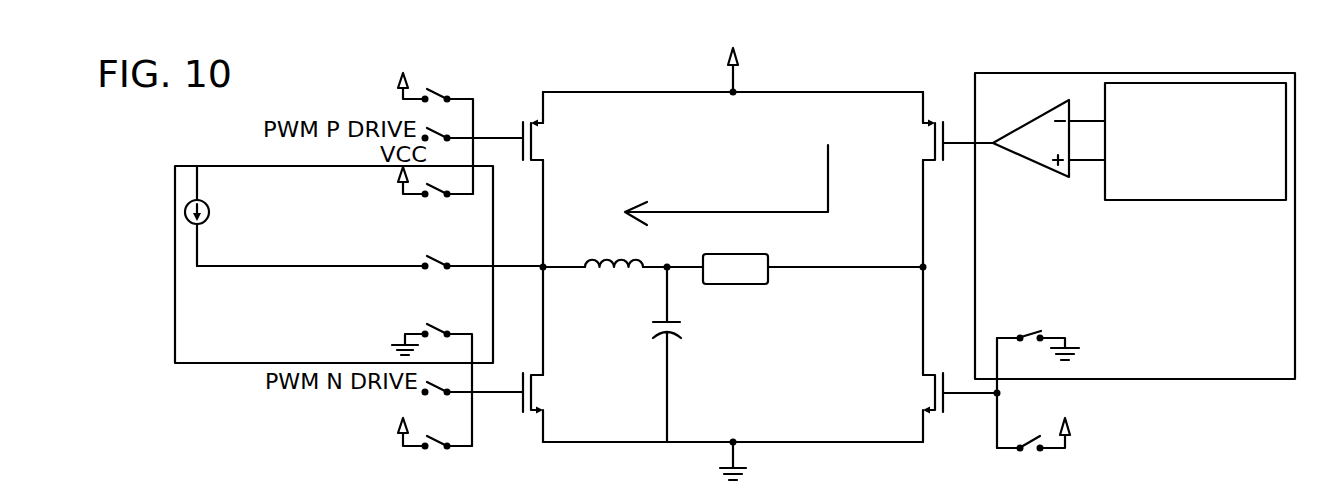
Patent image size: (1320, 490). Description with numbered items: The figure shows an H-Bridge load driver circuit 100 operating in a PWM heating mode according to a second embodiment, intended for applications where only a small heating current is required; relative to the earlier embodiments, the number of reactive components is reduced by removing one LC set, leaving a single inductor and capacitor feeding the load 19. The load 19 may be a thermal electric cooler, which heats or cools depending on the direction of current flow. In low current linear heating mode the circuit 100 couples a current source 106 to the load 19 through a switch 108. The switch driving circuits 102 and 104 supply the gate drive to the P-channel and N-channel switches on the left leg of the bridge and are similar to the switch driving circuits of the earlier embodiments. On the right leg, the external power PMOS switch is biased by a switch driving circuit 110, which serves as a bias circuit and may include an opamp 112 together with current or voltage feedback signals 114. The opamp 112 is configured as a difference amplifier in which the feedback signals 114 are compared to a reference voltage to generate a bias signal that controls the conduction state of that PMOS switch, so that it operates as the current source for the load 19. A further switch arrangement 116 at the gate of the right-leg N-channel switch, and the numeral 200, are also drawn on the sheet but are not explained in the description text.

The circuit 100 is at (572, 64).
The switch driving circuit 102 is at (438, 90).
The switch driving circuit 104 is at (433, 458).
The current source 106 is at (210, 203).
The switch 108 is at (443, 257).
The switch driving circuit 110 is at (1062, 72).
The opamp 112 is at (1060, 177).
The current or voltage feedback signals 114 is at (1193, 200).
The N2 gate switch 116 is at (1032, 457).
The load 19 is at (743, 285).
The circuit 200 is at (620, 489).